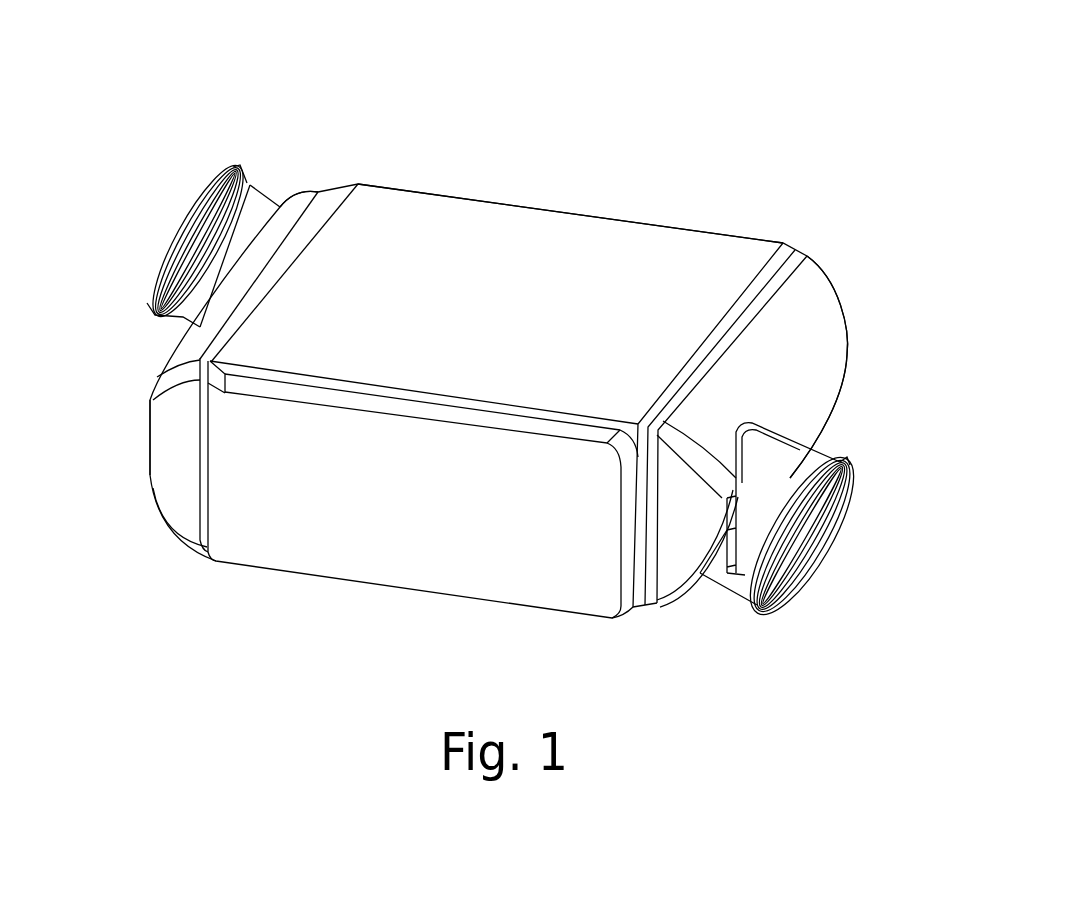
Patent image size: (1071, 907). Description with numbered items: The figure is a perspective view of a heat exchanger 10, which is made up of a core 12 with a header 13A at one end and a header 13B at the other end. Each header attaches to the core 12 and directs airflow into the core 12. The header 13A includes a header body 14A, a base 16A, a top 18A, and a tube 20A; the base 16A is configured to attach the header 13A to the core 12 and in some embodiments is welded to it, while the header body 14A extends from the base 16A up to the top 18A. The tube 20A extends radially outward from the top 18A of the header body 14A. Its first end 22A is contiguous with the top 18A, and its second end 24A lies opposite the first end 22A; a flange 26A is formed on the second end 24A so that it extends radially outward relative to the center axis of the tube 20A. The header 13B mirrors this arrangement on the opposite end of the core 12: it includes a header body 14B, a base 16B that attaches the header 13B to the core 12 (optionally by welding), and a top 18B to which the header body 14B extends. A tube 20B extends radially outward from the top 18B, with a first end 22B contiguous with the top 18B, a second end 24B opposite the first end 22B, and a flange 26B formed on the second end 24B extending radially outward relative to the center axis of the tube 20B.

The heat exchanger 10 is at (727, 112).
The core 12 is at (462, 210).
The header 13A is at (819, 257).
The header 13B is at (168, 540).
The header body 14A is at (843, 308).
The header body 14B is at (319, 192).
The base 16A is at (761, 263).
The base 16B is at (205, 562).
The top 18A is at (785, 417).
The top 18B is at (168, 345).
The tube 20A is at (738, 577).
The tube 20B is at (276, 205).
The first end 22A is at (697, 575).
The first end 22B is at (195, 313).
The second end 24A is at (836, 463).
The second end 24B is at (252, 182).
The flange 26A is at (848, 461).
The flange 26B is at (248, 166).